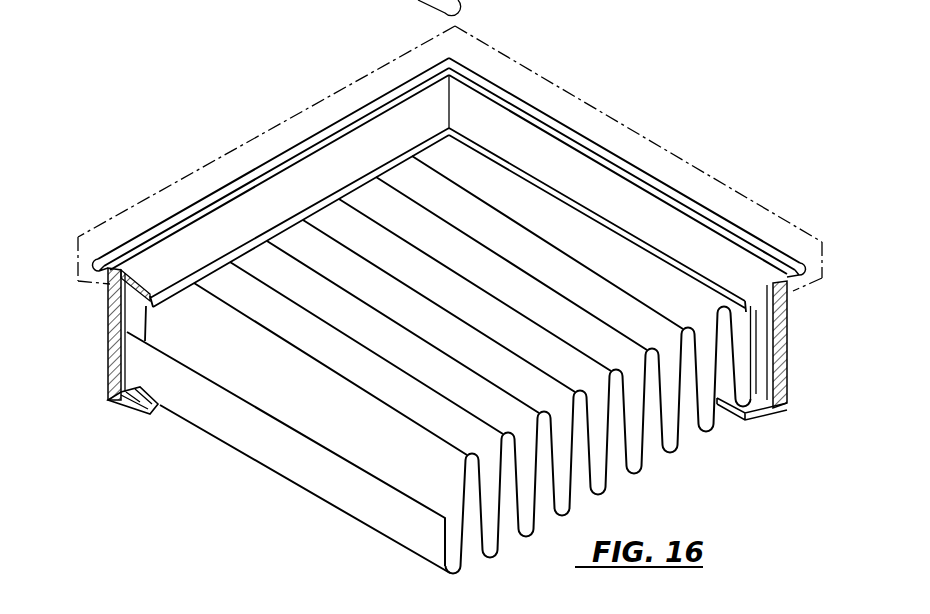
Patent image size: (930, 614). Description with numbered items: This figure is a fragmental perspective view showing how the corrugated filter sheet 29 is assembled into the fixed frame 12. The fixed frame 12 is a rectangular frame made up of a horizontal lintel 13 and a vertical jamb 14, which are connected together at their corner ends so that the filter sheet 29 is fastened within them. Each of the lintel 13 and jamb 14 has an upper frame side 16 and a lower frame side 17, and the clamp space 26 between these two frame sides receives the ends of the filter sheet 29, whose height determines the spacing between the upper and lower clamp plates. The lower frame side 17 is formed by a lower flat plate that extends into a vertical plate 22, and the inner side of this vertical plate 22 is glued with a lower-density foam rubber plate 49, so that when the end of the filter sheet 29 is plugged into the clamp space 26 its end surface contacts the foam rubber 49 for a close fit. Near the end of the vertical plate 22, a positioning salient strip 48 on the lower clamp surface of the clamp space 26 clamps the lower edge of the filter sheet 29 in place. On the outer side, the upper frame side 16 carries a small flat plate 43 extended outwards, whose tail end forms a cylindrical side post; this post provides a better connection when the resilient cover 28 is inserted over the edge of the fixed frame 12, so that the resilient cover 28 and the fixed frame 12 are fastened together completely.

The fixed frame 12 is at (626, 91).
The horizontal lintel 13 is at (195, 153).
The vertical jamb 14 is at (636, 196).
The upper frame side 16 is at (349, 150).
The lower frame side 17 is at (117, 421).
The vertical plate 22 is at (108, 343).
The clamp space 26 is at (178, 321).
The resilient cover 28 is at (81, 267).
The filter sheet 29 is at (302, 463).
The small flat plate 43 is at (312, 150).
The positioning salient strip 48 is at (149, 415).
The foam rubber plate 49 is at (113, 388).